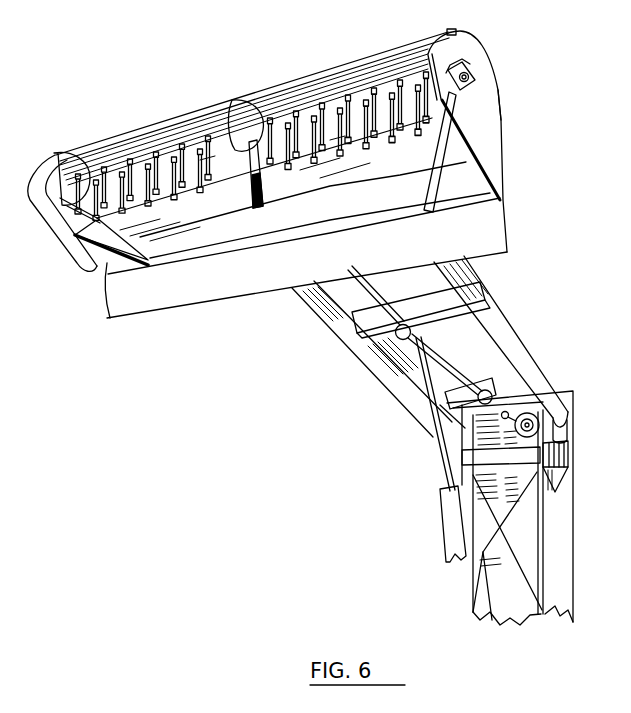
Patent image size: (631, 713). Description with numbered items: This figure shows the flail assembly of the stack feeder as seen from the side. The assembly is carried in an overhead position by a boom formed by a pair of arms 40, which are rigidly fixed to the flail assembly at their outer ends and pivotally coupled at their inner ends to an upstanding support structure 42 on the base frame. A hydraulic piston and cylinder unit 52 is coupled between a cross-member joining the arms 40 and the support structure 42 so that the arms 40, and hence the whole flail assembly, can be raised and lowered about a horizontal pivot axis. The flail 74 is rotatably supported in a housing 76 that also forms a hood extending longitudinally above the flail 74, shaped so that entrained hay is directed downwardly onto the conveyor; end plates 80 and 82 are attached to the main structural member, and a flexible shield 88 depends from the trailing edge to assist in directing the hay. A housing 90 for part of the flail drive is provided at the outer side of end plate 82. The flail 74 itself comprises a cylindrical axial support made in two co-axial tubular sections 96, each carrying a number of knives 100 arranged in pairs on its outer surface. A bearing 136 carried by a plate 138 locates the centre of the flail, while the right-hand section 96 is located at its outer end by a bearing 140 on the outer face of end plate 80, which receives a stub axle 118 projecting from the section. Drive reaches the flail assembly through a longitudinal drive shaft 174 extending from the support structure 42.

The arms 40 is at (507, 340).
The support structure 42 is at (582, 513).
The hydraulic piston and cylinder unit 52 is at (440, 520).
The flail 74 is at (325, 90).
The housing 76 is at (512, 106).
The end plate 80 is at (490, 162).
The end plate 82 is at (70, 167).
The flexible shield 88 is at (488, 235).
The housing 90 is at (71, 272).
The tubular sections 96 is at (157, 143).
The knives 100 is at (113, 160).
The stub axle 118 is at (478, 82).
The bearing 136 is at (275, 184).
The plate 138 is at (238, 112).
The bearing 140 is at (468, 70).
The longitudinal drive shaft 174 is at (380, 298).